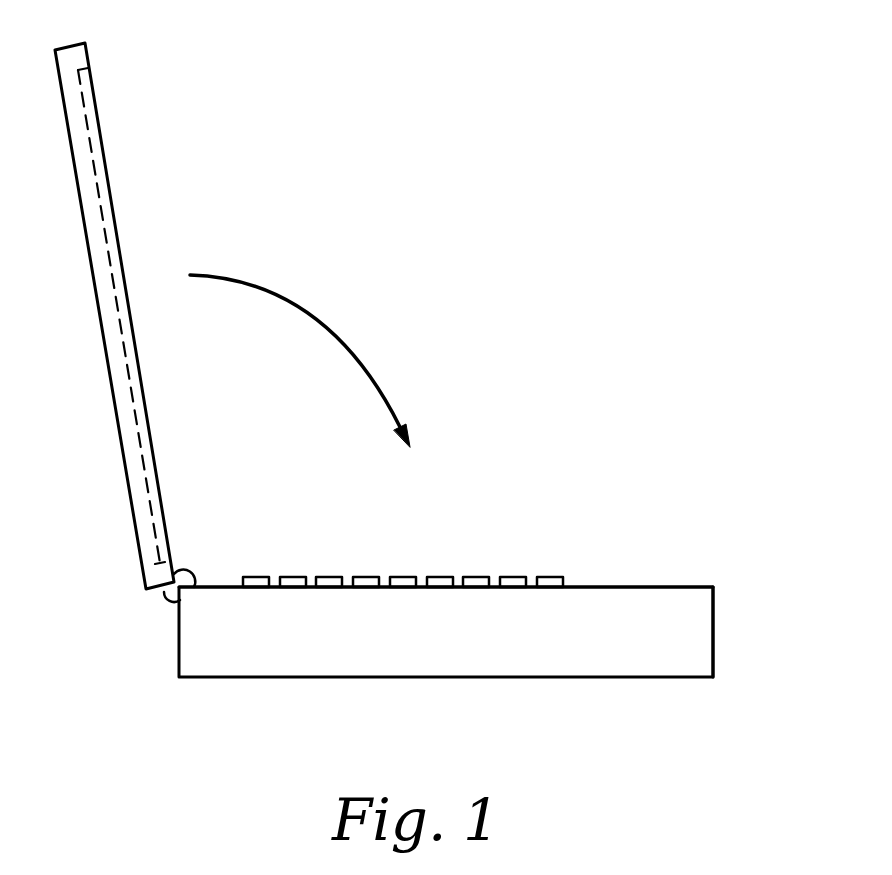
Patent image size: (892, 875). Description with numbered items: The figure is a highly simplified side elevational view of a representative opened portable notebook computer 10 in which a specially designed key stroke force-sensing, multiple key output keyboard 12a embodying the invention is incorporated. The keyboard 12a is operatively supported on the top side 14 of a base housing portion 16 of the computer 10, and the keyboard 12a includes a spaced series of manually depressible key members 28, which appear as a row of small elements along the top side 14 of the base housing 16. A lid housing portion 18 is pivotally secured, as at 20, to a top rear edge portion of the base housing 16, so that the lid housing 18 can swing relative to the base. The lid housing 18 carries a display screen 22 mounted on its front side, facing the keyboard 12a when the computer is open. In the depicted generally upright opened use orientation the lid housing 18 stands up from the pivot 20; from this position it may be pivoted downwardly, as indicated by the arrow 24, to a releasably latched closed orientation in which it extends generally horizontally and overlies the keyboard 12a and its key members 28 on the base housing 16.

The portable notebook computer 10 is at (438, 262).
The keyboard 12a is at (375, 553).
The top side of base housing portion 14 is at (650, 586).
The base housing portion 16 is at (713, 620).
The lid housing portion 18 is at (93, 285).
The pivot 20 is at (172, 597).
The display screen 22 is at (97, 183).
The arrow 24 is at (313, 318).
The key members 28 is at (312, 577).